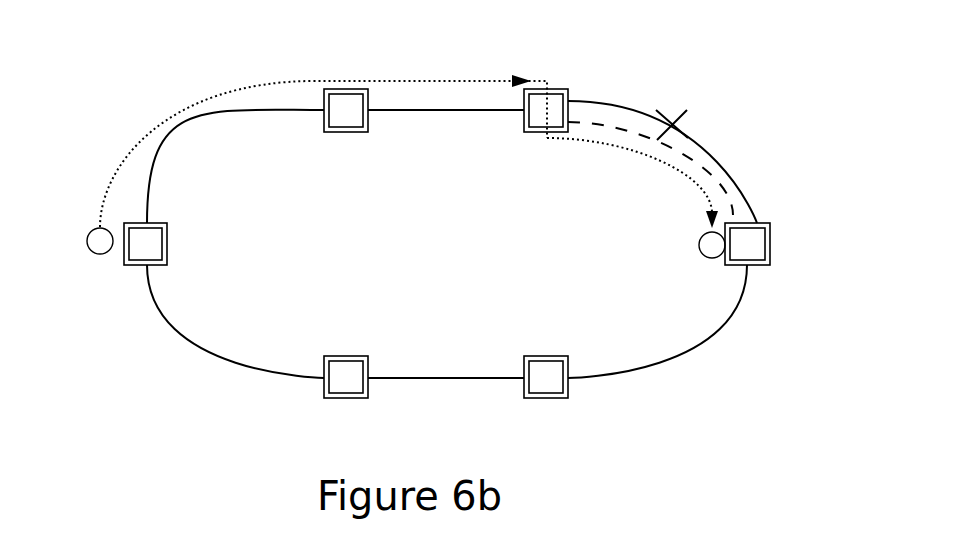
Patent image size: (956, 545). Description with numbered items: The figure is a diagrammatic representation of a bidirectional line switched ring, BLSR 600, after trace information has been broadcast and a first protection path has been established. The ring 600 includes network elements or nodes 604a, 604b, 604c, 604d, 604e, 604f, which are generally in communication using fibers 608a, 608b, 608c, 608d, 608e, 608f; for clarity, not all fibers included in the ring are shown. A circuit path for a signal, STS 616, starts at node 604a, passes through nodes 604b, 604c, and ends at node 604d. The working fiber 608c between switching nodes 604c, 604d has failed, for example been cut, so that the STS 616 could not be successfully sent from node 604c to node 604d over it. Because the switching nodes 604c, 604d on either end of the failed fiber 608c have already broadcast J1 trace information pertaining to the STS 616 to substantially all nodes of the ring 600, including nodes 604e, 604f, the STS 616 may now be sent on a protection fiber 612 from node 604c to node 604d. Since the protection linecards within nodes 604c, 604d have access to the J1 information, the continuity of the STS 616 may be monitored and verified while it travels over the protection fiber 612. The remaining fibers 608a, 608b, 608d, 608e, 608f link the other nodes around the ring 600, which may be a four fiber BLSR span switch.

The BLSR 600 is at (184, 54).
The node 604a is at (167, 243).
The node 604b is at (343, 133).
The switching node 604c is at (570, 93).
The switching node 604d is at (758, 225).
The node 604e is at (542, 398).
The node 604f is at (345, 398).
The fiber 608a is at (183, 160).
The fiber 608b is at (437, 112).
The fiber 608c is at (688, 138).
The fiber 608d is at (682, 355).
The fiber 608e is at (393, 377).
The fiber 608f is at (208, 347).
The protection fiber 612 is at (657, 163).
The STS 616 is at (135, 150).